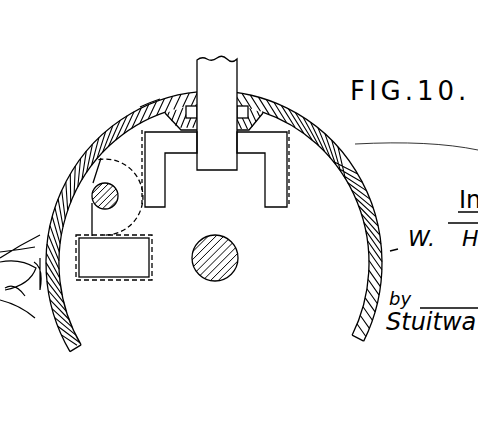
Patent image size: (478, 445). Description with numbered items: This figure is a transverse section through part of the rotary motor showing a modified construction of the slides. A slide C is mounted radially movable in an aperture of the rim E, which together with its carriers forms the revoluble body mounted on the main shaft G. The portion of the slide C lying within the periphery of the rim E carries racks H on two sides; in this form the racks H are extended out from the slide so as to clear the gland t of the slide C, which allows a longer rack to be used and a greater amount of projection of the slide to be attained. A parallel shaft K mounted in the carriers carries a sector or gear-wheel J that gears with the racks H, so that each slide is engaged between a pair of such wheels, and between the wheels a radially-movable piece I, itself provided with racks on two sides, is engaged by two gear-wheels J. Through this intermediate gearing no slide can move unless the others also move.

The slide C is at (237, 80).
The gland t is at (148, 106).
The rim E is at (365, 189).
The racks H is at (143, 168).
The shaft K is at (111, 184).
The gear-wheel J is at (134, 221).
The radially-movable piece I is at (107, 270).
The main shaft G is at (233, 247).